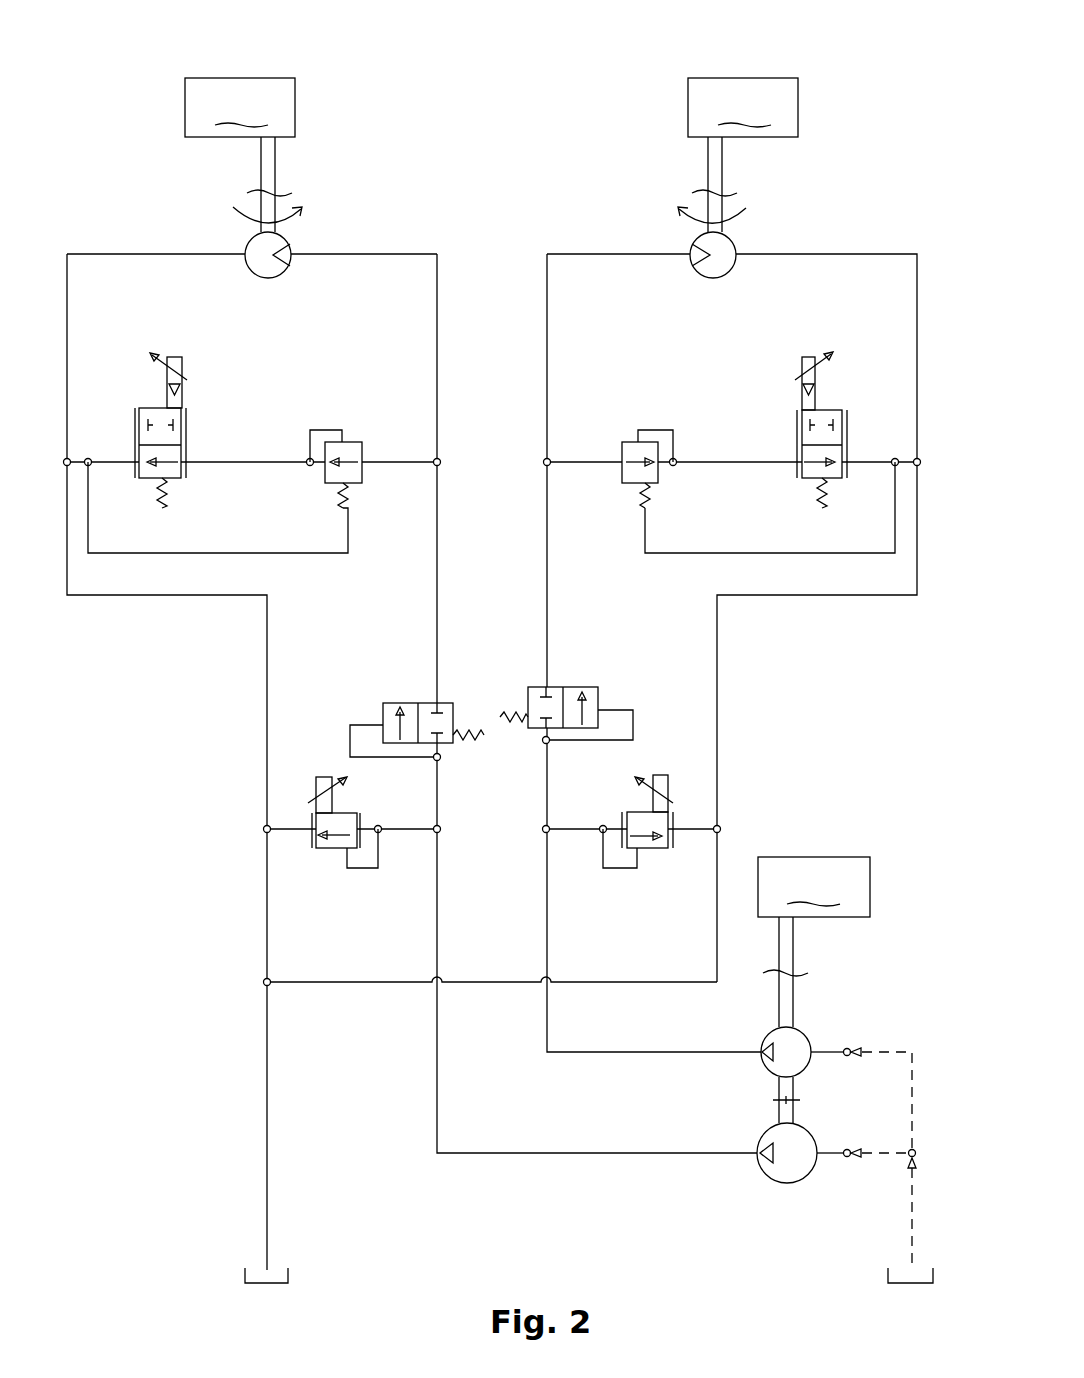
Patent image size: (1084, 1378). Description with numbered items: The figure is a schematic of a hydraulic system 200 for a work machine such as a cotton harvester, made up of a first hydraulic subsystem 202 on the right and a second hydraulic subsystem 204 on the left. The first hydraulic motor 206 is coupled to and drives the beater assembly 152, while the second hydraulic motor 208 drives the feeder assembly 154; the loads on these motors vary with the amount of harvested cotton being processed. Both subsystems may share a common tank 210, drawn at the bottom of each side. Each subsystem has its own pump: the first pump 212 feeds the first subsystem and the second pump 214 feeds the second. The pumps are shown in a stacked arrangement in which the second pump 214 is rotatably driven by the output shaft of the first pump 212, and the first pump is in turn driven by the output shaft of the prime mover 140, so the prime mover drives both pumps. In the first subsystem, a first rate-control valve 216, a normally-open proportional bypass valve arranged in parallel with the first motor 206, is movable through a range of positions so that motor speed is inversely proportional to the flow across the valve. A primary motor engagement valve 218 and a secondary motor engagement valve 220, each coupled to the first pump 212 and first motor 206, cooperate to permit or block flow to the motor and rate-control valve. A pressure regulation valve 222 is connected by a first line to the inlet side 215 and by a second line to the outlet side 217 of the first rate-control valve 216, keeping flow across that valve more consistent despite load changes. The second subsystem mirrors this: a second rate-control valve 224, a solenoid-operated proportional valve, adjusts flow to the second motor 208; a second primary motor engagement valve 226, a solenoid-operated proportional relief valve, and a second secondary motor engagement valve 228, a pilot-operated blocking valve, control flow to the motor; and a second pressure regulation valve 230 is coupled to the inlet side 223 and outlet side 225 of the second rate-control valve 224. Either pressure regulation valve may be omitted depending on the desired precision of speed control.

The hydraulic system 200 is at (542, 126).
The first hydraulic subsystem 202 is at (899, 242).
The second hydraulic subsystem 204 is at (105, 245).
The first hydraulic motor 206 is at (737, 242).
The second hydraulic motor 208 is at (292, 235).
The tank 210 is at (245, 1278).
The first pump 212 is at (803, 1027).
The second pump 214 is at (765, 1177).
The inlet side 215 is at (797, 463).
The first rate-control valve 216 is at (800, 397).
The outlet side 217 is at (847, 463).
The primary motor engagement valve 218 is at (658, 848).
The secondary motor engagement valve 220 is at (573, 687).
The pressure regulation valve 222 is at (630, 442).
The inlet side 223 is at (185, 463).
The second rate-control valve 224 is at (183, 397).
The outlet side 225 is at (137, 463).
The second primary motor engagement valve 226 is at (325, 848).
The second secondary motor engagement valve 228 is at (412, 703).
The second pressure regulation valve 230 is at (352, 442).
The prime mover 140 is at (814, 887).
The beater assembly 152 is at (743, 107).
The feeder assembly 154 is at (240, 107).